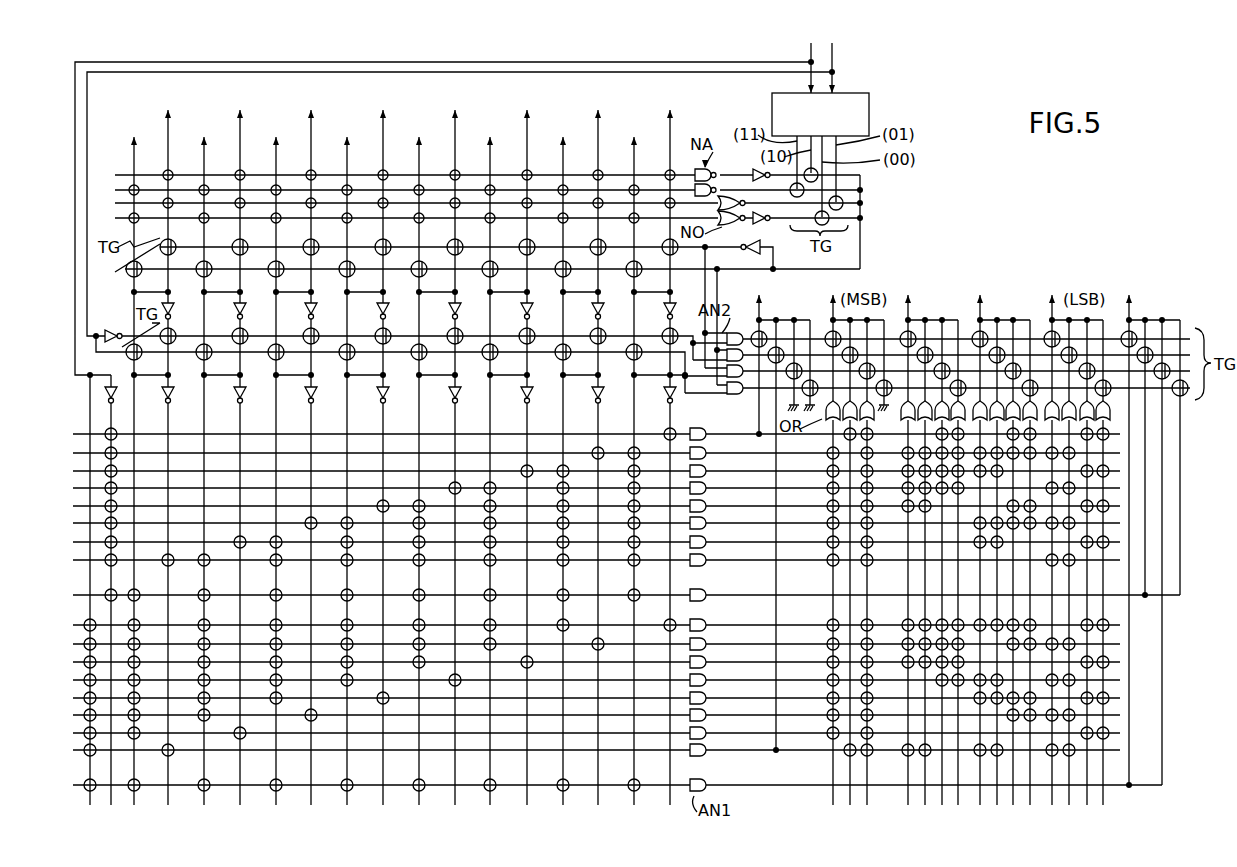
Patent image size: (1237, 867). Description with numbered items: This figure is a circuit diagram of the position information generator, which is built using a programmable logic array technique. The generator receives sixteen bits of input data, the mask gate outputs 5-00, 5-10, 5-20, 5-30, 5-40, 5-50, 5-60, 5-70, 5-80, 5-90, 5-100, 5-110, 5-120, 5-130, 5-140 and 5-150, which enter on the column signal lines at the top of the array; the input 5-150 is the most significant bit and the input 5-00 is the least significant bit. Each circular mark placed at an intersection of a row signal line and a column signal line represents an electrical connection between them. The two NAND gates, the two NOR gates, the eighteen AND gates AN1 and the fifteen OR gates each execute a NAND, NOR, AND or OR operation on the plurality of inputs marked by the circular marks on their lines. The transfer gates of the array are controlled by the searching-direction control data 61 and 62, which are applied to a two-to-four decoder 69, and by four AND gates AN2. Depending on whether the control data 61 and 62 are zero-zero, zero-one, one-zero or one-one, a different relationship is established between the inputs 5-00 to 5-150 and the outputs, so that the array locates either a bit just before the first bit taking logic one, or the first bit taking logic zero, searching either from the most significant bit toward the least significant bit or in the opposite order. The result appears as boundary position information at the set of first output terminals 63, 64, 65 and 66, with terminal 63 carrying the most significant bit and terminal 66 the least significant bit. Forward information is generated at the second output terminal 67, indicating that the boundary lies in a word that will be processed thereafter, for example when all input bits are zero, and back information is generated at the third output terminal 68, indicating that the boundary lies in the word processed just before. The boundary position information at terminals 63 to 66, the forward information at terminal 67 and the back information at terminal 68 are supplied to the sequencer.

The searching-direction control data 61 is at (832, 56).
The searching-direction control data 62 is at (811, 51).
The first output terminal 63 is at (856, 541).
The first output terminal 64 is at (931, 541).
The first output terminal 65 is at (1003, 541).
The first output terminal 66 is at (1076, 541).
The second output terminal 67 is at (1153, 532).
The third output terminal 68 is at (783, 515).
The two-to-four decoder 69 is at (850, 93).
The mask gate output 5-00 is at (136, 460).
The mask gate output 5-10 is at (206, 460).
The mask gate output 5-20 is at (278, 460).
The mask gate output 5-30 is at (349, 460).
The mask gate output 5-40 is at (421, 460).
The mask gate output 5-50 is at (492, 460).
The mask gate output 5-60 is at (565, 460).
The mask gate output 5-70 is at (636, 460).
The mask gate output 5-80 is at (170, 447).
The mask gate output 5-90 is at (242, 447).
The mask gate output 5-100 is at (312, 447).
The mask gate output 5-110 is at (384, 447).
The mask gate output 5-120 is at (456, 447).
The mask gate output 5-130 is at (528, 447).
The mask gate output 5-140 is at (599, 447).
The mask gate output 5-150 is at (671, 447).
The AND gates AN1 is at (698, 609).
The AND gates AN2 is at (712, 320).